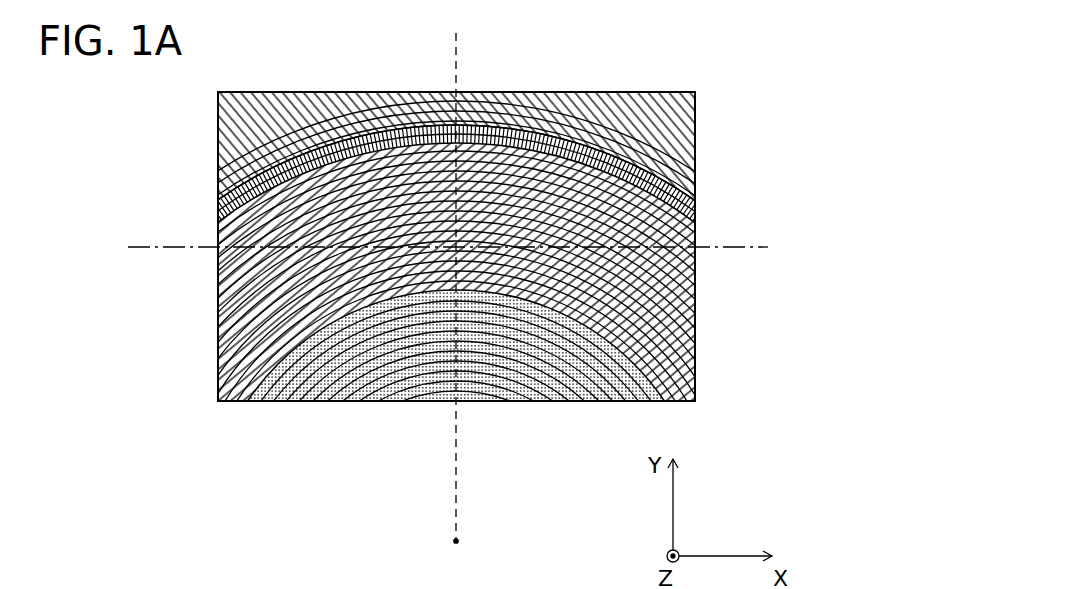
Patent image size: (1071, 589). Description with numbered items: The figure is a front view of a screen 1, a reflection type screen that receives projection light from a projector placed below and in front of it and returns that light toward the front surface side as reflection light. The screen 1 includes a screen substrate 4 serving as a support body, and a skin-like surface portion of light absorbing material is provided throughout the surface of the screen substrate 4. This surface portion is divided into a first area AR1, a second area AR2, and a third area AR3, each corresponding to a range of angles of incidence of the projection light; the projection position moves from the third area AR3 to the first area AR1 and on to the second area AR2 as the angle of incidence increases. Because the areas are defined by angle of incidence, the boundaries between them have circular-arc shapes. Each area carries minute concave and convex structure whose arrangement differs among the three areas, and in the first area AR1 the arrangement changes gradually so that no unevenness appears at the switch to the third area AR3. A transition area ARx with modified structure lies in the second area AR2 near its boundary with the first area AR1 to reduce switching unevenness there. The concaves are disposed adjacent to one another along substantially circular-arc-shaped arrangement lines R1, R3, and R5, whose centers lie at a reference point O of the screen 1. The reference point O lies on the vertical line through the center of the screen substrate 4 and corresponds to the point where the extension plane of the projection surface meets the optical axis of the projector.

The screen 1 is at (654, 64).
The screen substrate 4 is at (210, 178).
The arrangement line R3 is at (687, 94).
The second area AR2 is at (640, 118).
The transition area ARx is at (687, 191).
The arrangement line R1 is at (615, 288).
The first area AR1 is at (687, 322).
The arrangement line R5 is at (615, 373).
The third area AR3 is at (506, 373).
The reference point O is at (452, 533).